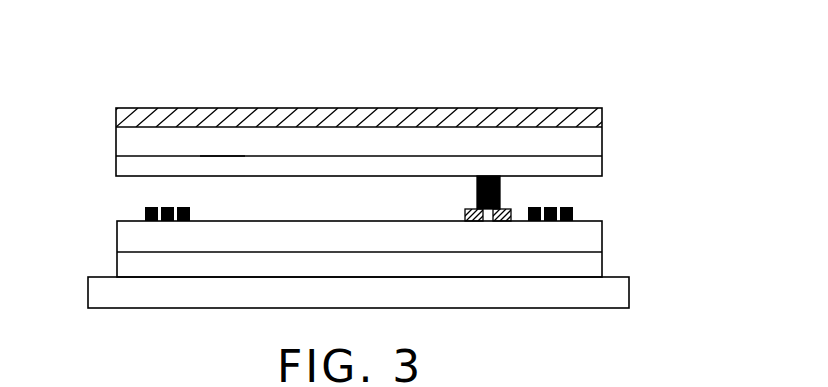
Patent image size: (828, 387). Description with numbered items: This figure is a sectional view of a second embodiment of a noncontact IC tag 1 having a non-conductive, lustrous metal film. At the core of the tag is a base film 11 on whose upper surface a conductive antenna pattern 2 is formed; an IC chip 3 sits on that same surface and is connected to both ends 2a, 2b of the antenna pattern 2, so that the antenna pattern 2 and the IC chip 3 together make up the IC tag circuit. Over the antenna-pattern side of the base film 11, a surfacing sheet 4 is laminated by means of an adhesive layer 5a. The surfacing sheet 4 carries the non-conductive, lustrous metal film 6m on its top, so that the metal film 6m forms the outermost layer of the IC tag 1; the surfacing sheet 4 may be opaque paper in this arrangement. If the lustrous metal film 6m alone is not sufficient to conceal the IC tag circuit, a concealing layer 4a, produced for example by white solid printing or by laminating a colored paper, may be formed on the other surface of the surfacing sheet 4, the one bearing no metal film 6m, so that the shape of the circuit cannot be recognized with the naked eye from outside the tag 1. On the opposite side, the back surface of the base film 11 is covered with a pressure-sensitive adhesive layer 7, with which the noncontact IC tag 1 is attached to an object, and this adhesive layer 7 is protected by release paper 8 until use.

The noncontact IC tag 1 is at (296, 96).
The antenna pattern 2 is at (200, 212).
The end of antenna pattern 2a is at (465, 209).
The end of antenna pattern 2b is at (506, 208).
The IC chip 3 is at (483, 176).
The surfacing sheet 4 is at (603, 140).
The concealing layer 4a is at (222, 157).
The adhesive layer 5a is at (603, 167).
The lustrous metal film 6m is at (603, 110).
The pressure-sensitive adhesive layer 7 is at (598, 260).
The release paper 8 is at (625, 292).
The base film 11 is at (593, 237).